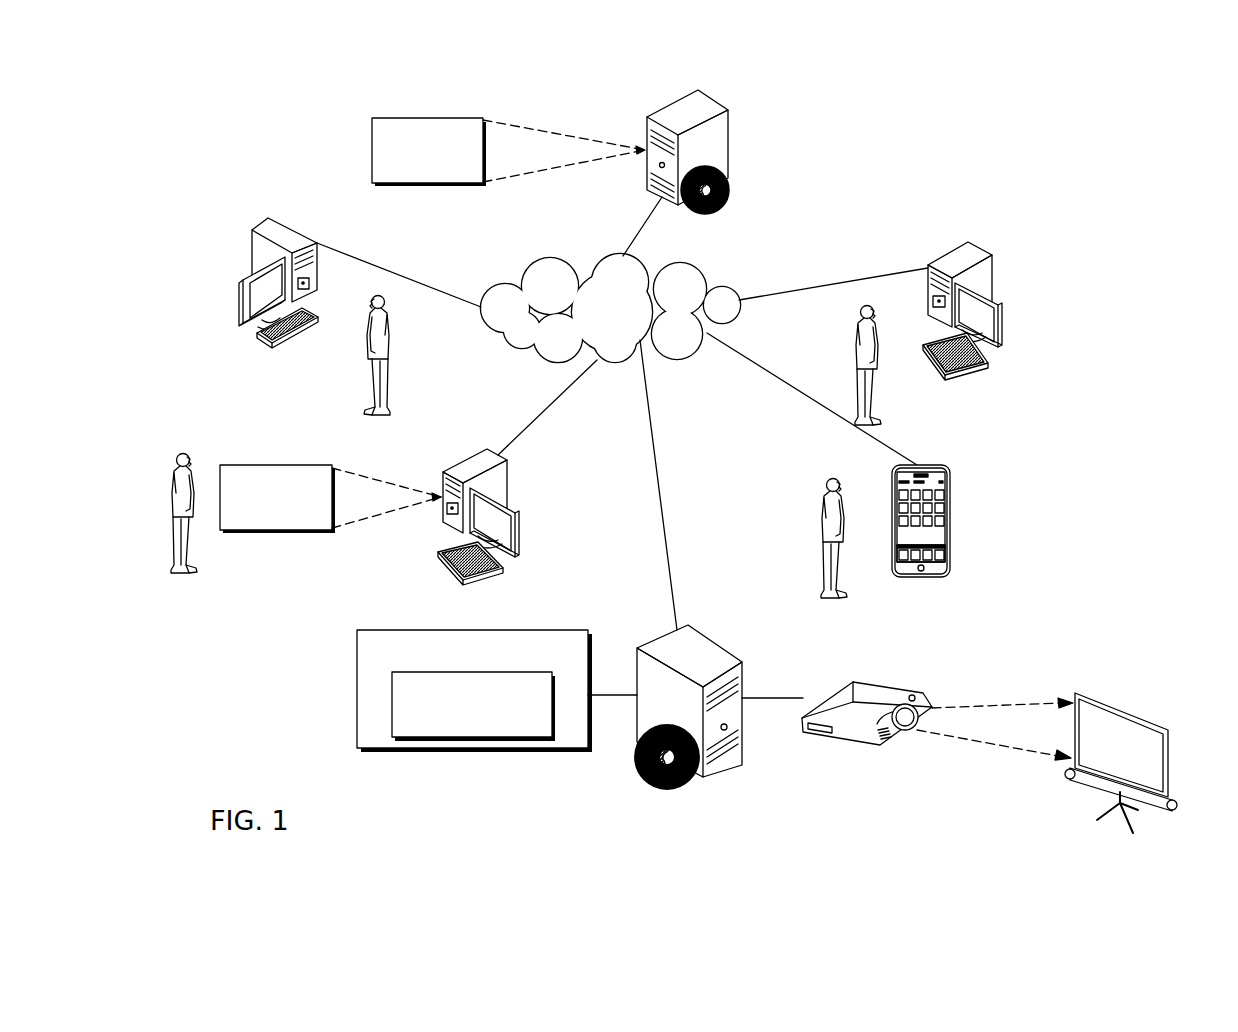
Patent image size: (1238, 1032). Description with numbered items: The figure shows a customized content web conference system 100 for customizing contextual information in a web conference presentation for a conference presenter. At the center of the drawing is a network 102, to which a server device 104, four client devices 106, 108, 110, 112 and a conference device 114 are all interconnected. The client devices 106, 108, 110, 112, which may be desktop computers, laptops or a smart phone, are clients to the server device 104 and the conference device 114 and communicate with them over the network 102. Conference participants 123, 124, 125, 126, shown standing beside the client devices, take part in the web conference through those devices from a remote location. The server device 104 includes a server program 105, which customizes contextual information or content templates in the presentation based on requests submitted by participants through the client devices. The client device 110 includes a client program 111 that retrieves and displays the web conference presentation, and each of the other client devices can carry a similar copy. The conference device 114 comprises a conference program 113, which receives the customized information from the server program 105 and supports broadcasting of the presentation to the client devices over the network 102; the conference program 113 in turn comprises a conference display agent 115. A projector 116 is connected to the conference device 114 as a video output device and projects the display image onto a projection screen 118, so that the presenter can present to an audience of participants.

The customized content web conference system 100 is at (994, 145).
The network 102 is at (685, 266).
The server device 104 is at (730, 122).
The server program 105 is at (372, 150).
The client device 106 is at (262, 222).
The client device 108 is at (995, 272).
The client device 110 is at (512, 476).
The client program 111 is at (273, 465).
The client device 112 is at (951, 520).
The conference program 113 is at (442, 717).
The conference device 114 is at (712, 641).
The conference display agent 115 is at (468, 737).
The projector 116 is at (894, 688).
The projection screen 118 is at (1142, 713).
The conference participant 123 is at (393, 325).
The conference participant 124 is at (858, 332).
The conference participant 125 is at (173, 480).
The conference participant 126 is at (824, 502).